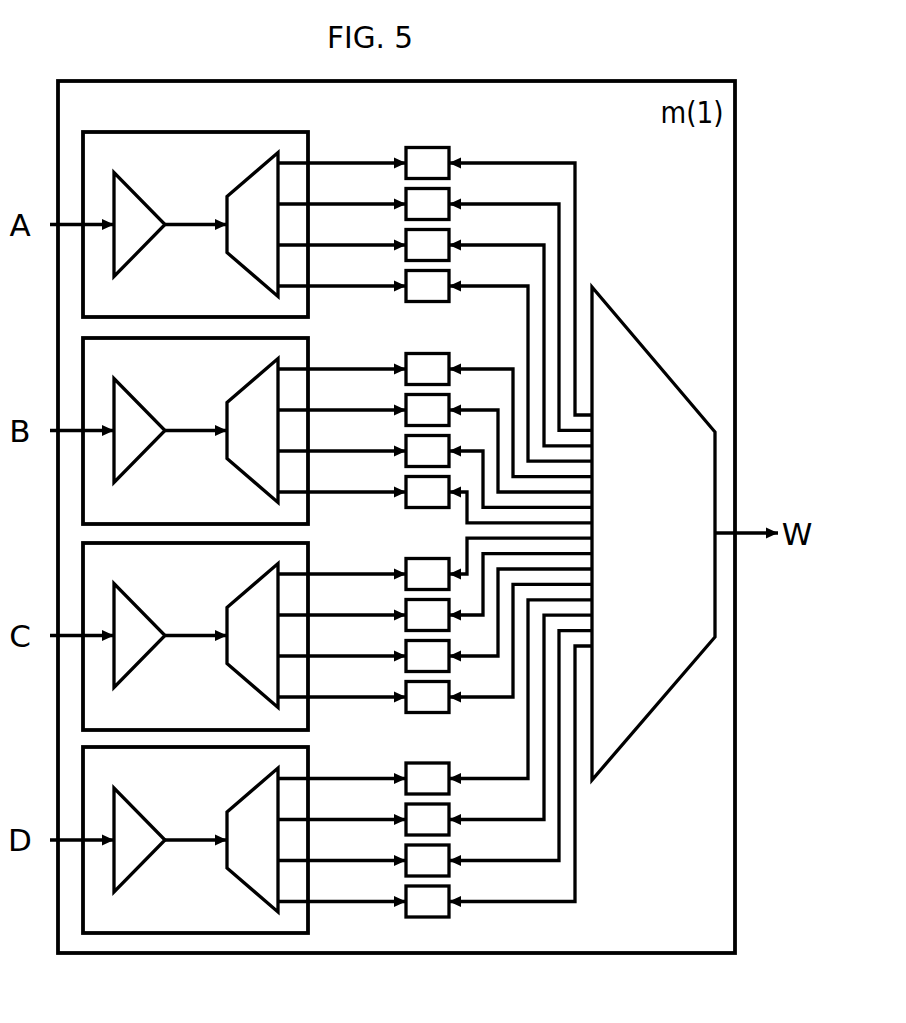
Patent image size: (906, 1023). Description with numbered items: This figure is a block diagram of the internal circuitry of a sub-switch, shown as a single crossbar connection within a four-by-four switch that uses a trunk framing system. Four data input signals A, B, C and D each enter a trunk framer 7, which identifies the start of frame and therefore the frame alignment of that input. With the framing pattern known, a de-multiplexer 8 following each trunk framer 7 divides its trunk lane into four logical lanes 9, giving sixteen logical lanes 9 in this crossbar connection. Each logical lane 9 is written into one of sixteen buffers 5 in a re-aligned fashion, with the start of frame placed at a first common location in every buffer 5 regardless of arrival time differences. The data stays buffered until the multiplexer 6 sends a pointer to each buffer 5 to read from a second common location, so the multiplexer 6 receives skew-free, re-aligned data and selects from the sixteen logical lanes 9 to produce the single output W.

The buffer 5 is at (427, 533).
The multiplexer 6 is at (582, 533).
The trunk framer 7 is at (139, 533).
The de-multiplexer 8 is at (252, 533).
The logical lane 9 is at (342, 519).